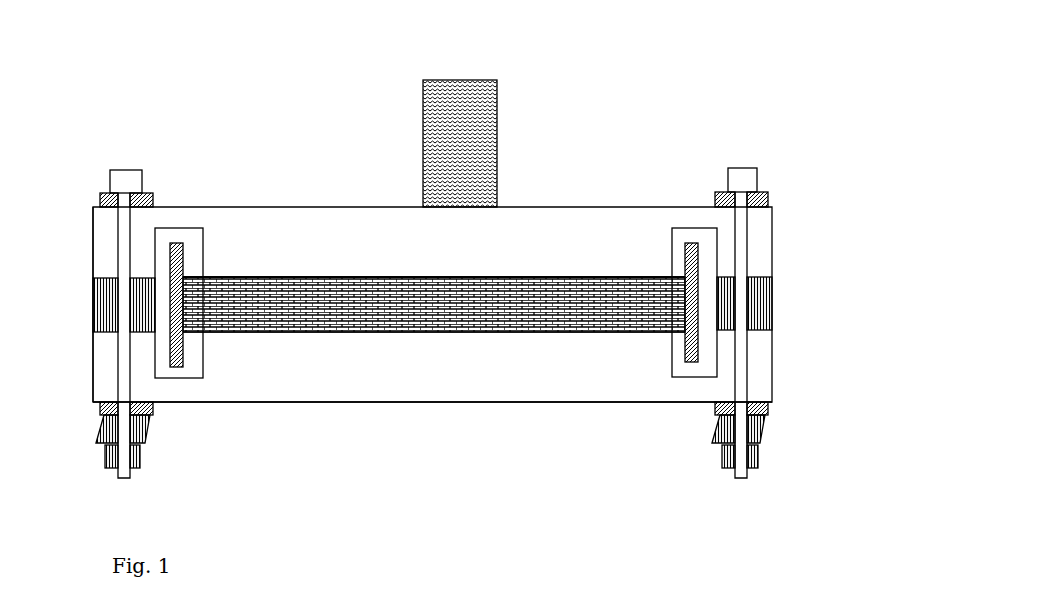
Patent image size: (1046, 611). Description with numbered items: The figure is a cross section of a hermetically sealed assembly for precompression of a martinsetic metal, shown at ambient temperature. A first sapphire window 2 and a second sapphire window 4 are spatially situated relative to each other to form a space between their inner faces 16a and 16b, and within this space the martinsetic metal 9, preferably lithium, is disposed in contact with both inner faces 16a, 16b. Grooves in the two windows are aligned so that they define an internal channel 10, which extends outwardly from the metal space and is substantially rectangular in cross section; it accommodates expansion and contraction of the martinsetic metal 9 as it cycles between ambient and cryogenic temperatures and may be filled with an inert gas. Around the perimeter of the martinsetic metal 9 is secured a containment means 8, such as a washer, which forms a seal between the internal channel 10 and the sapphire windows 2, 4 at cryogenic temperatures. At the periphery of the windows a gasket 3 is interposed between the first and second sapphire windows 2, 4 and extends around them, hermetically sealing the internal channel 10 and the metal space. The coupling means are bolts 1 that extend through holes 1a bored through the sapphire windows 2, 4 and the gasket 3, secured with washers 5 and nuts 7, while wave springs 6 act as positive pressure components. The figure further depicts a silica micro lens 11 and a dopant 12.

The bolt 1 is at (123, 177).
The hole 1a is at (86, 158).
The first sapphire window 2 is at (432, 304).
The gasket 3 is at (98, 312).
The second sapphire window 4 is at (432, 374).
The washer 5 is at (152, 193).
The wave spring 6 is at (145, 432).
The nut 7 is at (142, 460).
The containment means 8 is at (705, 302).
The martinsetic metal 9 is at (302, 292).
The internal channel 10 is at (707, 273).
The silica micro lens 11 is at (480, 160).
The dopant 12 is at (458, 282).
The inner face 16a is at (590, 275).
The inner face 16b is at (453, 333).